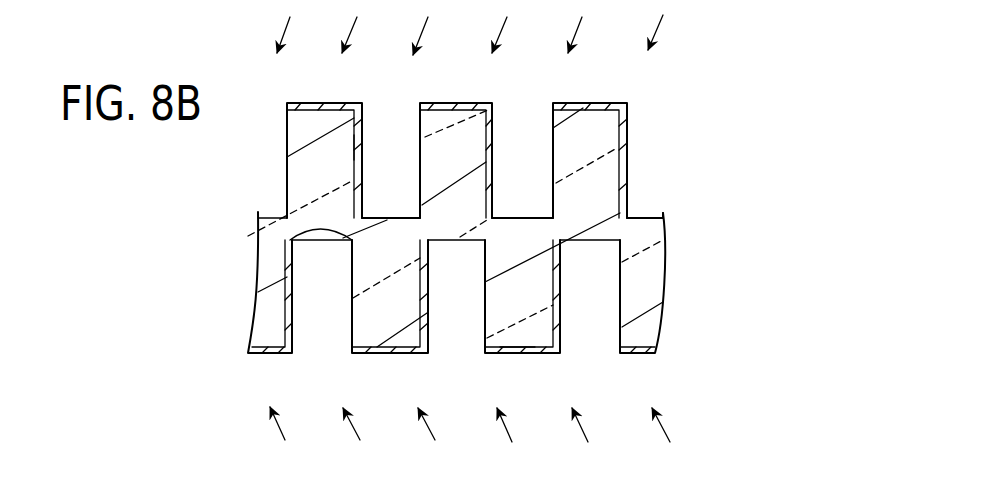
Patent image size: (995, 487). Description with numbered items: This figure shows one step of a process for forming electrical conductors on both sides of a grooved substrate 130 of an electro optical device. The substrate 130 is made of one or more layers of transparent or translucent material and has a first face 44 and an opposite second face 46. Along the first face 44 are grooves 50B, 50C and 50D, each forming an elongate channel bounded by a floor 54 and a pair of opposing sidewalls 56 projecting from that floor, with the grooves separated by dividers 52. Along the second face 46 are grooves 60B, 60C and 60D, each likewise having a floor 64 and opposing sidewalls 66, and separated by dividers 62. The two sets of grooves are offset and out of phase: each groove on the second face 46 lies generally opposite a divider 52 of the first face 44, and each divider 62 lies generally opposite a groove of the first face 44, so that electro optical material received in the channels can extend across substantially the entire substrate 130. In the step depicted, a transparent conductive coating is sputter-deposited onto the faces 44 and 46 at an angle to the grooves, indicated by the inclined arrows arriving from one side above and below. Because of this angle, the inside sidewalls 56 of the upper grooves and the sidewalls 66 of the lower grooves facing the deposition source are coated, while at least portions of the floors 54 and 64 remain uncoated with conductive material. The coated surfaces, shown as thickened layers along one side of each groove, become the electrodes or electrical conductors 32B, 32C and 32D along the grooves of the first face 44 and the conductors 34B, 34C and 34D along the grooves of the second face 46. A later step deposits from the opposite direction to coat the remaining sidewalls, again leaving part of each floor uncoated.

The conductor 32B is at (347, 142).
The conductor 32C is at (464, 135).
The conductor 32D is at (628, 128).
The conductor 34B is at (293, 328).
The conductor 34C is at (389, 319).
The conductor 34D is at (530, 334).
The first face 44 is at (581, 106).
The second face 46 is at (658, 353).
The groove 50B is at (410, 188).
The groove 50C is at (542, 188).
The groove 50D is at (675, 188).
The divider 52 is at (448, 137).
The floor 54 is at (372, 224).
The sidewall 56 is at (362, 147).
The groove 60B is at (340, 298).
The groove 60C is at (477, 298).
The groove 60D is at (608, 298).
The divider 62 is at (512, 337).
The floor 64 is at (288, 230).
The sidewall 66 is at (351, 327).
The substrate 130 is at (305, 180).